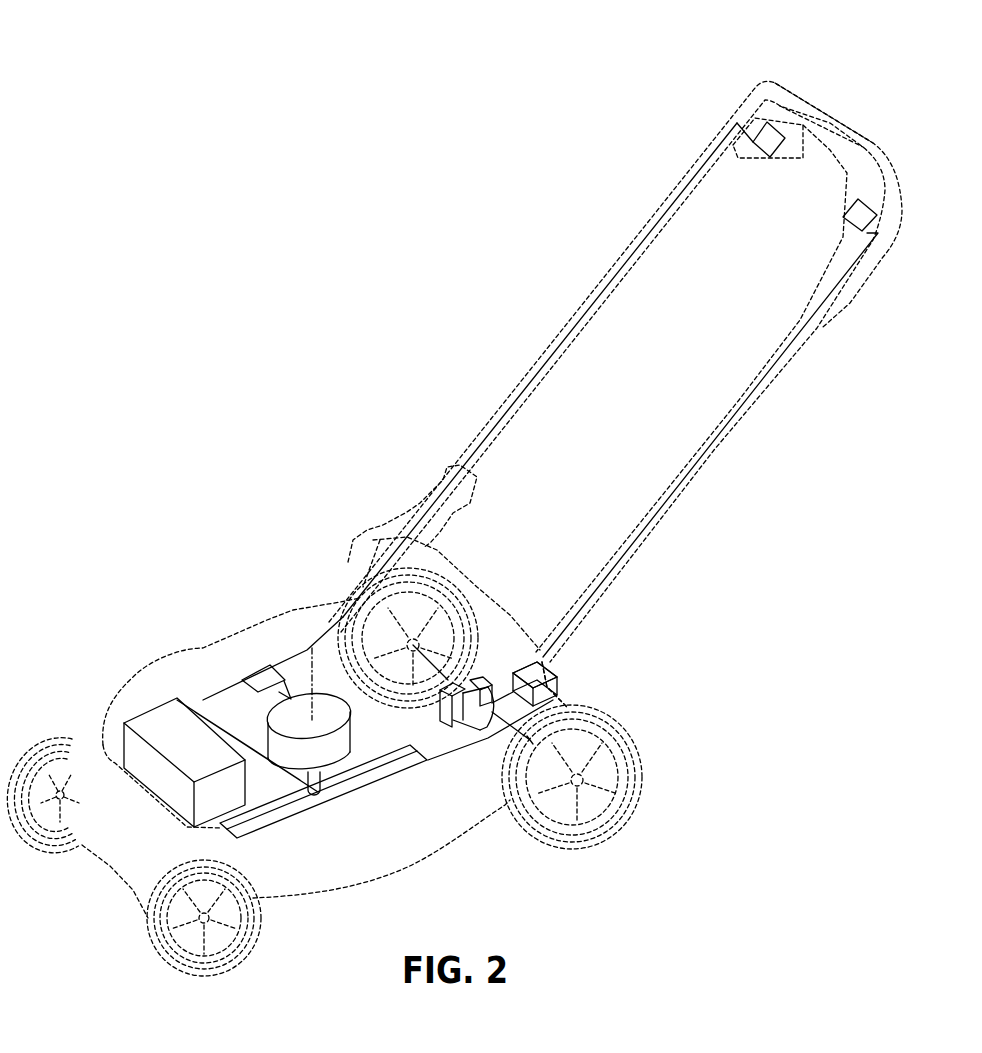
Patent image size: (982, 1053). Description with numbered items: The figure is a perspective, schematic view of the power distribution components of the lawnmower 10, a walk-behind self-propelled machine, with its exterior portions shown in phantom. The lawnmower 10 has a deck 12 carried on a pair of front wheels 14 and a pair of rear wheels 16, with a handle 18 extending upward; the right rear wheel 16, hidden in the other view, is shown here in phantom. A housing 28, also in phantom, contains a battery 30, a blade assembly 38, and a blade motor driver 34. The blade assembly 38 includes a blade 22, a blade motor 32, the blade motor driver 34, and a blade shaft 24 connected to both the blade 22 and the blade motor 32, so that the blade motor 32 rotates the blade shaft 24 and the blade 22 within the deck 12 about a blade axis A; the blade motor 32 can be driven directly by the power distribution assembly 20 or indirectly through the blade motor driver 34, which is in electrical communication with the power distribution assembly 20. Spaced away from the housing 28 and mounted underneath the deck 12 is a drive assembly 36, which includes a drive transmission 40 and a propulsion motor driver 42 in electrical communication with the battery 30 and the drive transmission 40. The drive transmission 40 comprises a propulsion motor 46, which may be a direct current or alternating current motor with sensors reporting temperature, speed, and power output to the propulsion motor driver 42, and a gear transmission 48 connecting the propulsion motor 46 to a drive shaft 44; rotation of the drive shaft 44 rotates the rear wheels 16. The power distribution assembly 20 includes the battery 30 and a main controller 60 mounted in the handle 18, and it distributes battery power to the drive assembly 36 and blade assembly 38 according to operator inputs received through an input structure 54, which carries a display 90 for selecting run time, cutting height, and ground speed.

The lawnmower 10 is at (850, 81).
The deck 12 is at (405, 870).
The front wheels 14 is at (57, 852).
The rear wheels 16 is at (443, 555).
The handle 18 is at (770, 377).
The power distribution assembly 20 is at (235, 614).
The blade 22 is at (278, 822).
The blade shaft 24 is at (322, 790).
The housing 28 is at (106, 715).
The battery 30 is at (157, 722).
The blade motor 32 is at (285, 723).
The blade motor driver 34 is at (251, 666).
The drive assembly 36 is at (573, 665).
The blade assembly 38 is at (400, 800).
The drive transmission 40 is at (528, 670).
The propulsion motor driver 42 is at (555, 683).
The drive shaft 44 is at (485, 684).
The propulsion motor 46 is at (485, 730).
The gear transmission 48 is at (535, 675).
The input structure 54 is at (847, 120).
The main controller 60 is at (845, 233).
The display 90 is at (768, 157).
The blade axis A is at (310, 648).